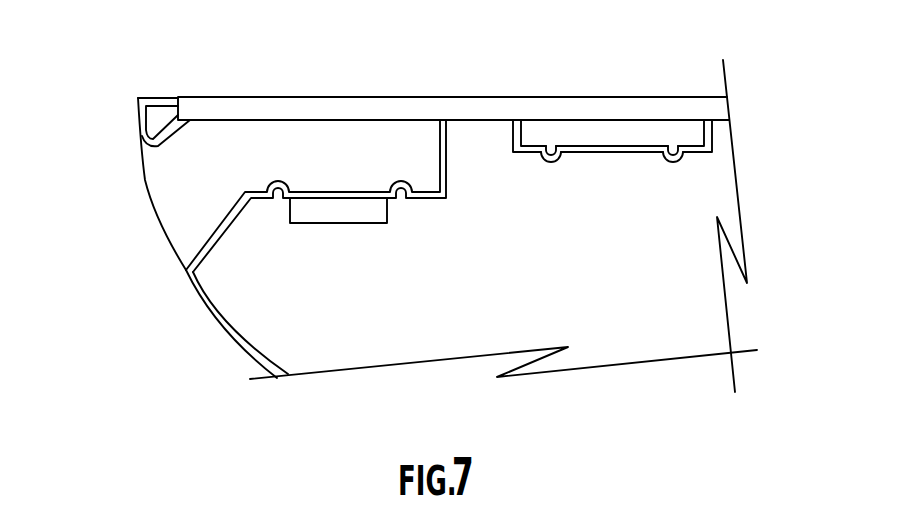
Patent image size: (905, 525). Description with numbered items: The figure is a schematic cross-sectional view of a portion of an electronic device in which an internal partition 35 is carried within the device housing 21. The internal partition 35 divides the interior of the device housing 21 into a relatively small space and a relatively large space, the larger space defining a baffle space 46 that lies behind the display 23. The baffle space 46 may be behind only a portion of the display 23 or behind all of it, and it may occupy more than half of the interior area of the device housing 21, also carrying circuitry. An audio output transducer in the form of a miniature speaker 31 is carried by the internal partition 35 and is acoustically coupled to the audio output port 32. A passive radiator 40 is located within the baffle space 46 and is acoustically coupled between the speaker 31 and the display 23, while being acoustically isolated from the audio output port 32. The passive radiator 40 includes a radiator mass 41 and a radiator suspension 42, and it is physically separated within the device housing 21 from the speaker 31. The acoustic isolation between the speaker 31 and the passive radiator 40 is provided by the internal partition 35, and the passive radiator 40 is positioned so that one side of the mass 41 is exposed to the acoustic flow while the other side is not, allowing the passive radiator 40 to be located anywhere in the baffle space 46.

The device housing 21 is at (249, 348).
The display 23 is at (483, 105).
The miniature speaker 31 is at (338, 208).
The audio output port 32 is at (177, 202).
The internal partition 35 is at (440, 152).
The passive radiator 40 is at (717, 147).
The radiator mass 41 is at (613, 155).
The radiator suspension 42 is at (550, 162).
The baffle space 46 is at (577, 297).